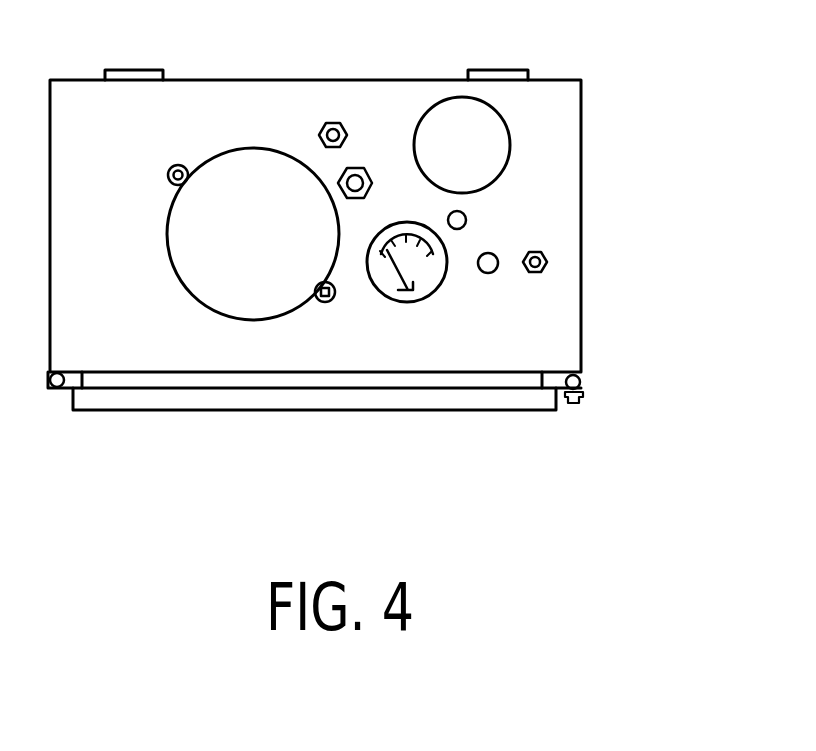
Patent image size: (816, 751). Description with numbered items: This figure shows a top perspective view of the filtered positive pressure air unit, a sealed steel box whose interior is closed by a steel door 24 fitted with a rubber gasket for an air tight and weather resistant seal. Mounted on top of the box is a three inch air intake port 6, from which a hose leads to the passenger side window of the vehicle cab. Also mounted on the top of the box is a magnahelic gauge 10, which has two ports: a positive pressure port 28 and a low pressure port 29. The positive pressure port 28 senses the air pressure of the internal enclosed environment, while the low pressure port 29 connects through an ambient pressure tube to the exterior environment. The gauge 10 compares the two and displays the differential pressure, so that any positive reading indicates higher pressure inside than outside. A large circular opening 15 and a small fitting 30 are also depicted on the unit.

The air intake port 6 is at (452, 97).
The magnahelic gauge 10 is at (437, 287).
The large circular opening 15 is at (181, 283).
The steel door 24 is at (313, 410).
The positive pressure port 28 is at (359, 166).
The low pressure port 29 is at (466, 218).
The hinge bracket 30 is at (583, 393).